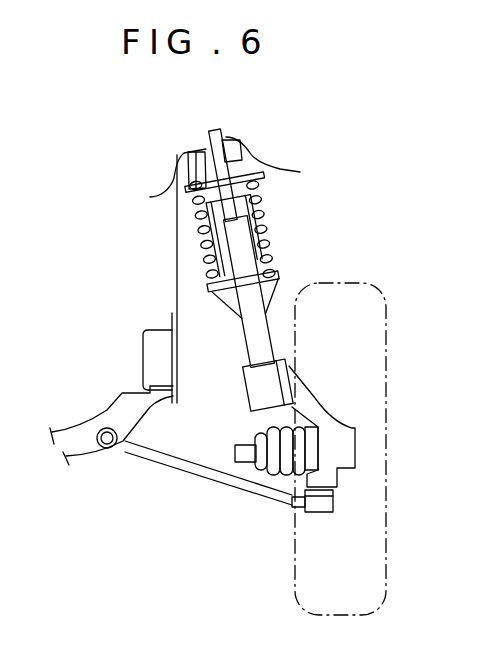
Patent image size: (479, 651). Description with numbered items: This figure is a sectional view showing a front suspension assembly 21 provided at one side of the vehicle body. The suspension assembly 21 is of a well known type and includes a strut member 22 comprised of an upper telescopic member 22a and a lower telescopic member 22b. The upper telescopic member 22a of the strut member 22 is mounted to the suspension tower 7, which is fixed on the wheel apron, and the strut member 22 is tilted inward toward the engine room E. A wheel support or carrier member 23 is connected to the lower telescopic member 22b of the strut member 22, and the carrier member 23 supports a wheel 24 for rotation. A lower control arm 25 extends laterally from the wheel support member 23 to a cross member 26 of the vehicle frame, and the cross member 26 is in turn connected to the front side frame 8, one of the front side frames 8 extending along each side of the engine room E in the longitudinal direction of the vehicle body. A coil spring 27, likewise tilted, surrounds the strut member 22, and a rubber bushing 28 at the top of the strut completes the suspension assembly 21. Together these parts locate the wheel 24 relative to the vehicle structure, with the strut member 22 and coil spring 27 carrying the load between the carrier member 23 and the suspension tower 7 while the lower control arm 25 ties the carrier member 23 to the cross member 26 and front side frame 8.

The suspension tower 7 is at (175, 194).
The front side frame 8 is at (143, 352).
The front suspension assembly 21 is at (363, 202).
The strut member 22 is at (240, 230).
The upper telescopic member 22a is at (281, 184).
The lower telescopic member 22b is at (248, 338).
The wheel support or carrier member 23 is at (345, 452).
The wheel 24 is at (368, 318).
The lower control arm 25 is at (185, 468).
The cross member 26 is at (83, 445).
The coil spring 27 is at (276, 258).
The rubber bushing 28 is at (228, 142).
The engine room E is at (139, 210).